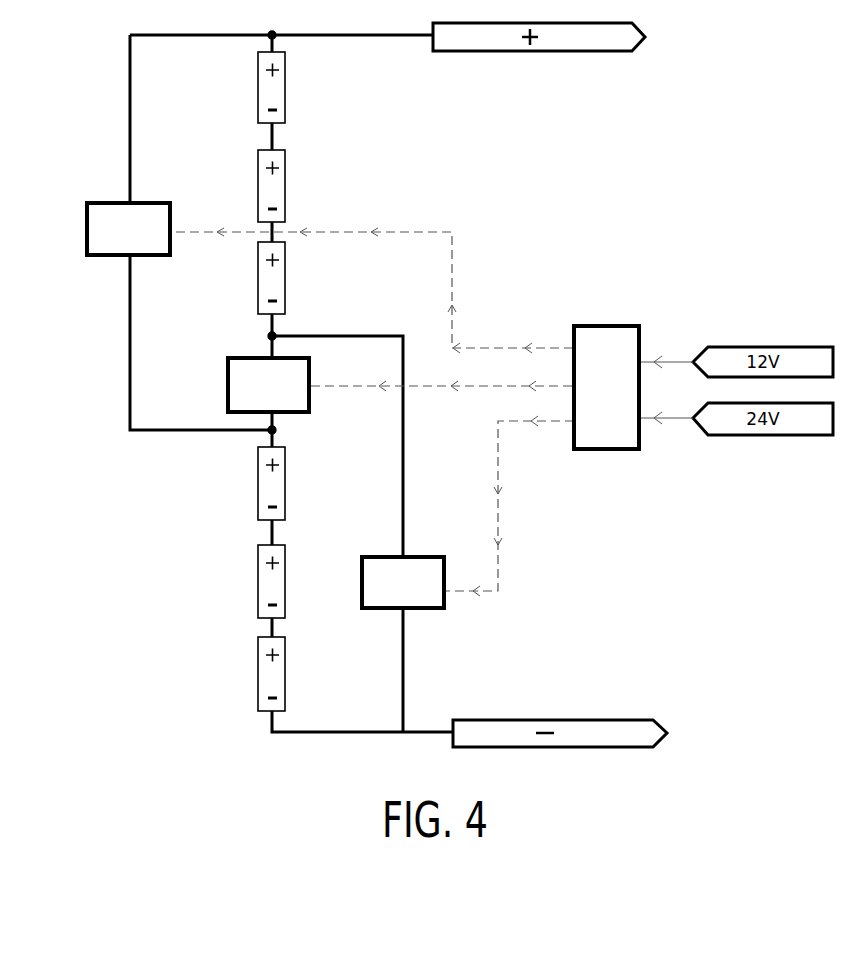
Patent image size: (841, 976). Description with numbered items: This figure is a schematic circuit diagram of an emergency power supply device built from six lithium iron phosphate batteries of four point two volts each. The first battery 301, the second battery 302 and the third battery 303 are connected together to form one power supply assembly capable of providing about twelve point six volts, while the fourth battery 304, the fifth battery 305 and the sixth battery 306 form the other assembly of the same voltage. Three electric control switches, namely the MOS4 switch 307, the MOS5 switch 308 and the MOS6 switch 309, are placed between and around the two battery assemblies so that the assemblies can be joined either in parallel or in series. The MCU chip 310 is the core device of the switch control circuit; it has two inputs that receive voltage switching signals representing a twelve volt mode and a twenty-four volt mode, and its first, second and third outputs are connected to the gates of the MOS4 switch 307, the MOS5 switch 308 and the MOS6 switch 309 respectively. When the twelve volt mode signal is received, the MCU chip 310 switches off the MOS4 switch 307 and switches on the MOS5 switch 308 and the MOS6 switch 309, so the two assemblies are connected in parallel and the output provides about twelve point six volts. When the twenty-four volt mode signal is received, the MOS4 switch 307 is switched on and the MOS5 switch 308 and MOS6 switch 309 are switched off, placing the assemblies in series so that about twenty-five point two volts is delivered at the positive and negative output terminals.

The first battery 301 is at (247, 681).
The second battery 302 is at (240, 573).
The third battery 303 is at (240, 483).
The fourth battery 304 is at (247, 285).
The fifth battery 305 is at (240, 182).
The sixth battery 306 is at (240, 87).
The MOS4 switch 307 is at (217, 375).
The MOS5 switch 308 is at (98, 192).
The MOS6 switch 309 is at (356, 572).
The MCU chip 310 is at (568, 318).